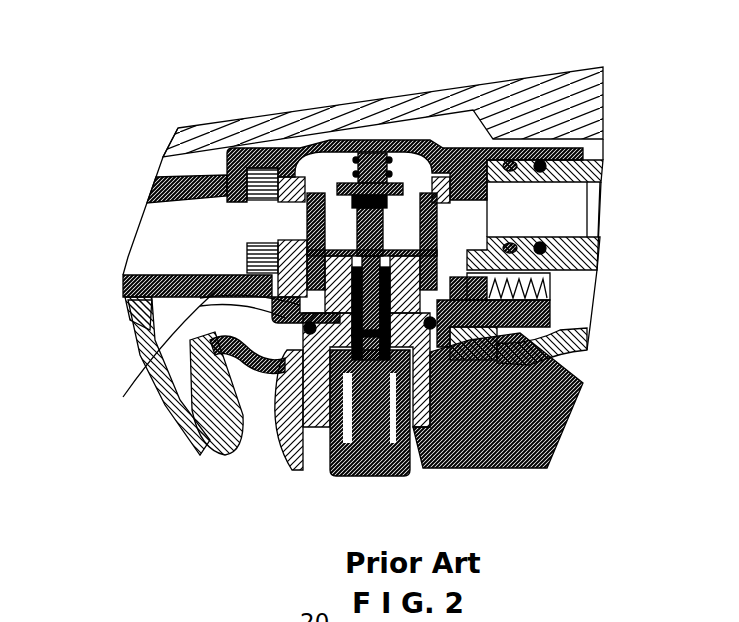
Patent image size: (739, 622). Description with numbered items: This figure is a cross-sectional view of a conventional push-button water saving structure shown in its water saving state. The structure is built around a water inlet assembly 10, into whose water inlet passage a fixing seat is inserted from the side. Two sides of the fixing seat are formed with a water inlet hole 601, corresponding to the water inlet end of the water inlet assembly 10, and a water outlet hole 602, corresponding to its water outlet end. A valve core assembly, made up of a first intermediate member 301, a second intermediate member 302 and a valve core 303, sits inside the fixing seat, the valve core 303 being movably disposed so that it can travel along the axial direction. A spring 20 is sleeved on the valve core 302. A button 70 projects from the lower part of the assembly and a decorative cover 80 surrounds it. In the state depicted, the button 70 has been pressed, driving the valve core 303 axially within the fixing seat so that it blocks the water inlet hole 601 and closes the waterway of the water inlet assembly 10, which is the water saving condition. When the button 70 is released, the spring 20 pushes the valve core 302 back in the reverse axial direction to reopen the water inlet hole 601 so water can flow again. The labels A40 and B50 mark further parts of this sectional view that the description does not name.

The water inlet assembly 10 is at (556, 131).
The spring 20 is at (355, 157).
The second intermediate member 302 is at (400, 150).
The valve core 303 is at (440, 147).
The water outlet hole 602 is at (293, 212).
The water inlet hole 601 is at (477, 217).
The first intermediate member 301 is at (505, 303).
The retainer band B50 is at (453, 333).
The decorative cover 80 is at (557, 438).
The button 70 is at (407, 470).
The lever A40 is at (152, 385).